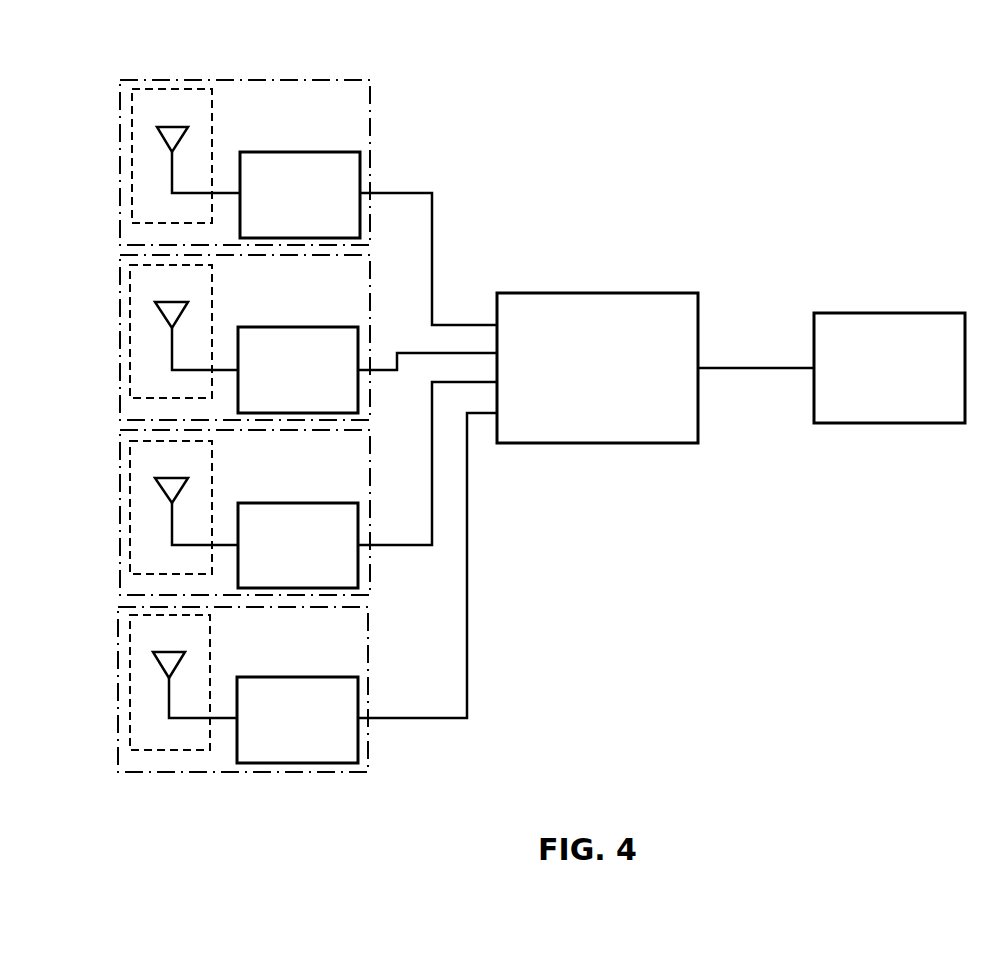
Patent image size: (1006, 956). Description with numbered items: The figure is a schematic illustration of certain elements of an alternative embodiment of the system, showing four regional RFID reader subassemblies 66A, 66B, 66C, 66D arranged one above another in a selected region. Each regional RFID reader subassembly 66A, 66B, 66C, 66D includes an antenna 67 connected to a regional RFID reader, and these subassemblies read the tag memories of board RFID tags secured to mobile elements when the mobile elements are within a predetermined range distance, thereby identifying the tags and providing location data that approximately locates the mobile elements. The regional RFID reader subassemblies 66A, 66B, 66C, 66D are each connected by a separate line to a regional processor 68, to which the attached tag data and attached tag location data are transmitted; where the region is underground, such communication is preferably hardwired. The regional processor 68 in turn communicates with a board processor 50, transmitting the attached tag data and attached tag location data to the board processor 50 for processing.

The regional RFID reader subassembly 66A is at (242, 77).
The regional RFID reader subassembly 66B is at (115, 340).
The regional RFID reader subassembly 66C is at (115, 515).
The regional RFID reader subassembly 66D is at (218, 775).
The antenna 67 is at (163, 140).
The regional processor 68 is at (618, 398).
The board processor 50 is at (912, 401).